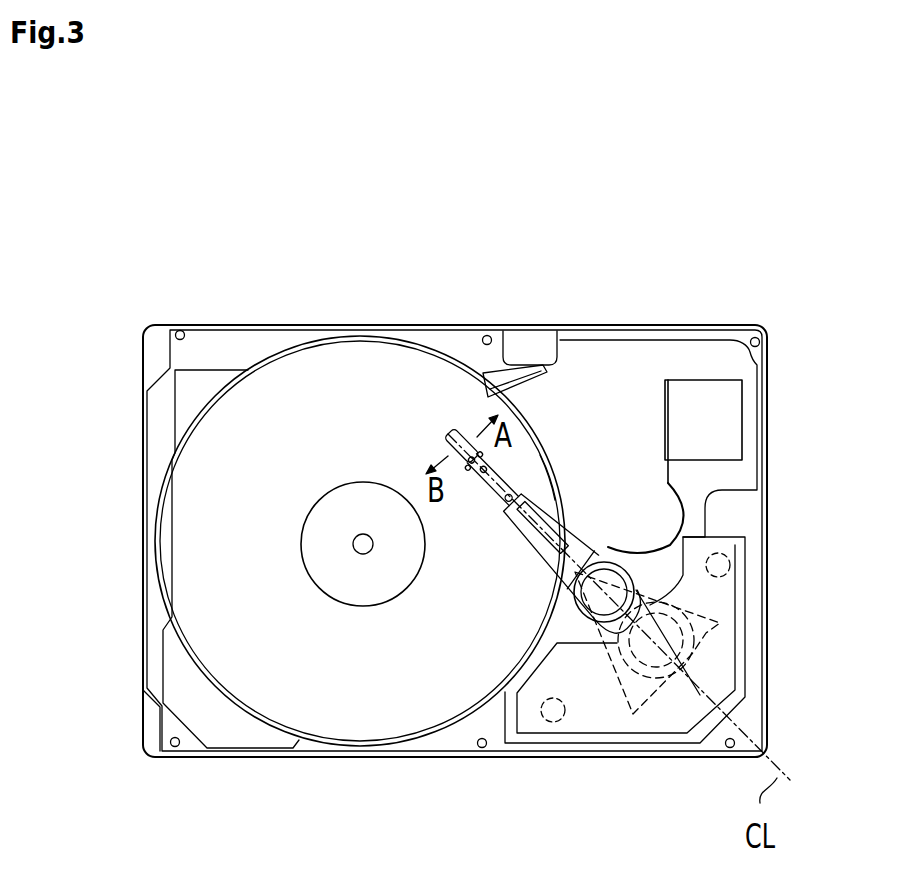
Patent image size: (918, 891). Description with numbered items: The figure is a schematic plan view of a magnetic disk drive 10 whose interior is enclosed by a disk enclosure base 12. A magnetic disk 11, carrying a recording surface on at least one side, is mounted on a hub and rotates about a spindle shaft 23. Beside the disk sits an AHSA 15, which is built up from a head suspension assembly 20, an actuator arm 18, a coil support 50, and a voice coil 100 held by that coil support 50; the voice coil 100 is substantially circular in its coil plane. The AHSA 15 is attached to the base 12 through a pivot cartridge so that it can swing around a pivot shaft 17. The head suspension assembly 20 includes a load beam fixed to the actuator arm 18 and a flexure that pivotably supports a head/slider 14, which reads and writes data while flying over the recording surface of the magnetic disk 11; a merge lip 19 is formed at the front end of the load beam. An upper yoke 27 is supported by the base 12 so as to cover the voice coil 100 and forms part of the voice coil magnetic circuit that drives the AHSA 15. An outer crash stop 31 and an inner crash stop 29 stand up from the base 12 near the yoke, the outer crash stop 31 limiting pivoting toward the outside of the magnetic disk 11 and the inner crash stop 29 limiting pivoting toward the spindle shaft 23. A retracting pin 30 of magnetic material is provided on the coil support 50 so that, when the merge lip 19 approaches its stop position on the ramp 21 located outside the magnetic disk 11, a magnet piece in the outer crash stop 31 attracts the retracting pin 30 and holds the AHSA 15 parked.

The magnetic disk drive 10 is at (500, 283).
The magnetic disk 11 is at (185, 537).
The disk enclosure base 12 is at (618, 325).
The head/slider 14 is at (472, 436).
The AHSA 15 is at (527, 474).
The pivot shaft 17 is at (602, 580).
The actuator arm 18 is at (520, 553).
The merge lip 19 is at (445, 434).
The head suspension assembly 20 is at (505, 497).
The ramp 21 is at (537, 380).
The spindle shaft 23 is at (363, 554).
The upper yoke 27 is at (745, 662).
The inner crash stop 29 is at (731, 564).
The retracting pin 30 is at (677, 680).
The outer crash stop 31 is at (541, 722).
The coil support 50 is at (725, 640).
The voice coil 100 is at (678, 665).